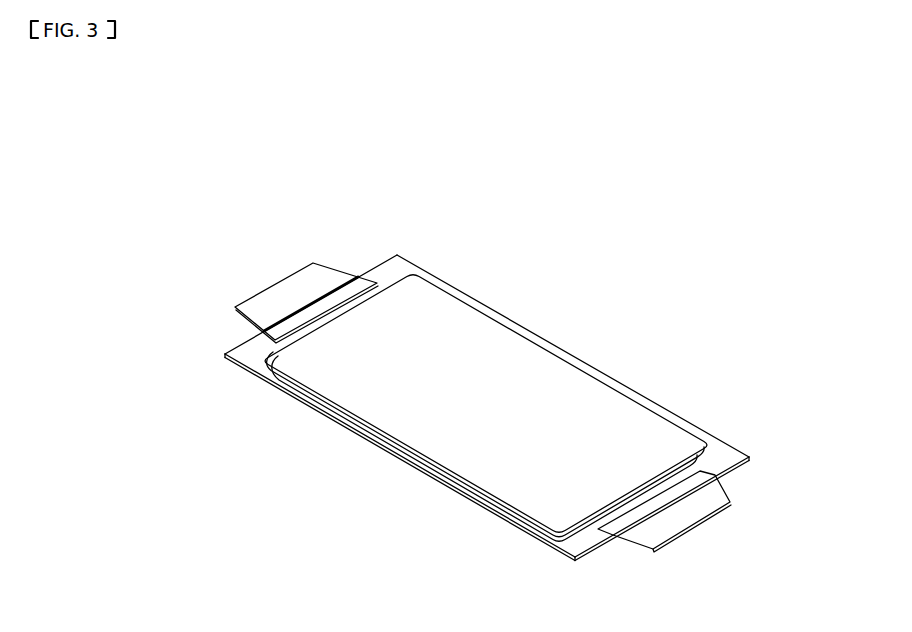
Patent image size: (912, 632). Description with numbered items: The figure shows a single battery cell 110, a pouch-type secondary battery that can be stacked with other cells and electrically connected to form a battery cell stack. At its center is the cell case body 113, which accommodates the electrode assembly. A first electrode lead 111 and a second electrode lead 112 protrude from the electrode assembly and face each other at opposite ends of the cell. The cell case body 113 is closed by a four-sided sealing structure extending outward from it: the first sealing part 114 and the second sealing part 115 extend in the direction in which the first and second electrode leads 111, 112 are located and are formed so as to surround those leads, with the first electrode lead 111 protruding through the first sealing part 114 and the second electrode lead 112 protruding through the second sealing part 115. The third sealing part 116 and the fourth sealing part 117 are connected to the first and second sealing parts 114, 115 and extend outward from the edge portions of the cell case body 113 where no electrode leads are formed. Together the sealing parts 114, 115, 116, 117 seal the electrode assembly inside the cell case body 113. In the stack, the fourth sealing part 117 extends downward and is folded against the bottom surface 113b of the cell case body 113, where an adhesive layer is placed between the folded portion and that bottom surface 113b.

The battery cell 110 is at (452, 93).
The first electrode lead 111 is at (281, 281).
The second electrode lead 112 is at (707, 520).
The cell case body 113 is at (498, 347).
The bottom surface of the cell case body 113b is at (325, 392).
The first sealing part 114 is at (394, 256).
The second sealing part 115 is at (587, 538).
The third sealing part 116 is at (630, 388).
The fourth sealing part 117 is at (447, 482).